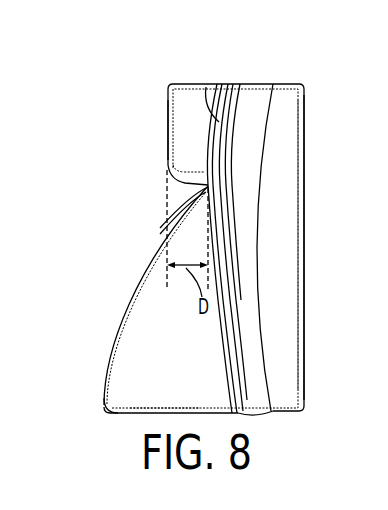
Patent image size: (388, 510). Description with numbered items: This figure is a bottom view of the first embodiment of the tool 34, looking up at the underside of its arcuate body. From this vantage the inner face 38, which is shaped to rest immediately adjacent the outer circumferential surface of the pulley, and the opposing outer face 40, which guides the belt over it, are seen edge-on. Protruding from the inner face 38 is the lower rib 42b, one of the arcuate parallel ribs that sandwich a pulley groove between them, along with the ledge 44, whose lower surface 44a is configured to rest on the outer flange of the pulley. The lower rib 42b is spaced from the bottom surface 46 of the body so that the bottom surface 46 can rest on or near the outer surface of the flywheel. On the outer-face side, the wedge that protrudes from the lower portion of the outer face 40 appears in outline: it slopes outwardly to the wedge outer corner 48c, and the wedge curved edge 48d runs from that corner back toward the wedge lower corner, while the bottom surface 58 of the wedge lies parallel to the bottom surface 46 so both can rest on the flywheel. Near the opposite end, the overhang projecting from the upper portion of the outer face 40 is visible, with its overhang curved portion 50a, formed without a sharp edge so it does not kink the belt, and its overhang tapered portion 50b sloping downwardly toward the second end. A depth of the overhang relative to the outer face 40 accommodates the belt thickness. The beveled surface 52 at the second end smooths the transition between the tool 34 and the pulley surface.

The tool 34 is at (317, 75).
The inner face 38 is at (235, 385).
The outer face 40 is at (177, 207).
The lower rib 42b is at (243, 332).
The ledge 44 is at (314, 241).
The lower surface of the ledge 44a is at (290, 195).
The bottom surface of the body 46 is at (227, 128).
The wedge outer corner 48c is at (103, 407).
The wedge curved edge 48d is at (108, 342).
The overhang curved portion 50a is at (167, 175).
The overhang tapered portion 50b is at (167, 112).
The beveled surface 52 is at (220, 97).
The bottom surface of the wedge 58 is at (176, 376).